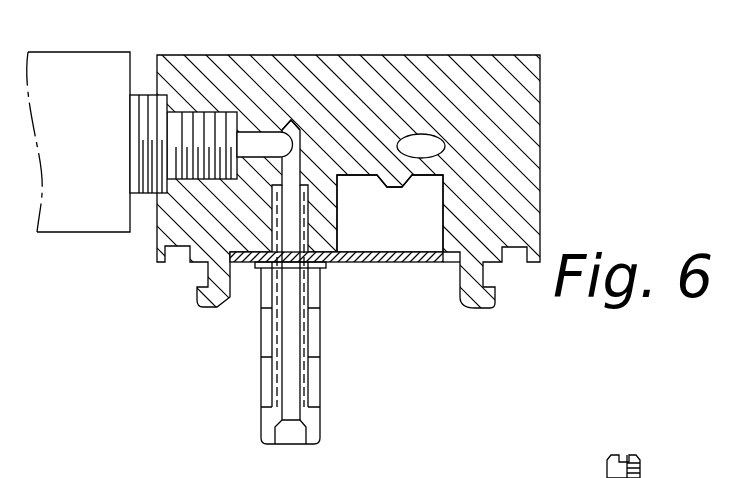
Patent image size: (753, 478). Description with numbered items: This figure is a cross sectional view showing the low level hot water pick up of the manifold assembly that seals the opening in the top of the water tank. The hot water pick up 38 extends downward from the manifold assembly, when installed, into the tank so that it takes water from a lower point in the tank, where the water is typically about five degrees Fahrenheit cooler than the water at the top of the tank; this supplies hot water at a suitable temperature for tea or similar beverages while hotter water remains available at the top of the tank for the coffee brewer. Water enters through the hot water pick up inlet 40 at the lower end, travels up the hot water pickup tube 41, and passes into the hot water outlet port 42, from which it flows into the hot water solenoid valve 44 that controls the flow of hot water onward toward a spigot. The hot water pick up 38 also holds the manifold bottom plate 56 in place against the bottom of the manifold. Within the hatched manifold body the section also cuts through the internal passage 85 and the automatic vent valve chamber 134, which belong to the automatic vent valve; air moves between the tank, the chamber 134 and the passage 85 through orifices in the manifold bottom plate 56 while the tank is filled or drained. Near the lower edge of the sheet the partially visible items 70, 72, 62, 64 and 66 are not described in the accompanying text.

The hot water solenoid valve 44 is at (85, 68).
The hot water outlet port 42 is at (222, 112).
The passage 85 is at (418, 142).
The automatic vent valve chamber 134 is at (431, 182).
The manifold bottom plate 56 is at (420, 259).
The hot water pickup tube 41 is at (288, 310).
The hot water pick up 38 is at (317, 347).
The hot water pick up inlet 40 is at (302, 433).
The screw 70 is at (645, 460).
The washer 72 is at (668, 477).
The bracket 62 is at (725, 467).
The member 64 is at (566, 473).
The member 66 is at (453, 473).